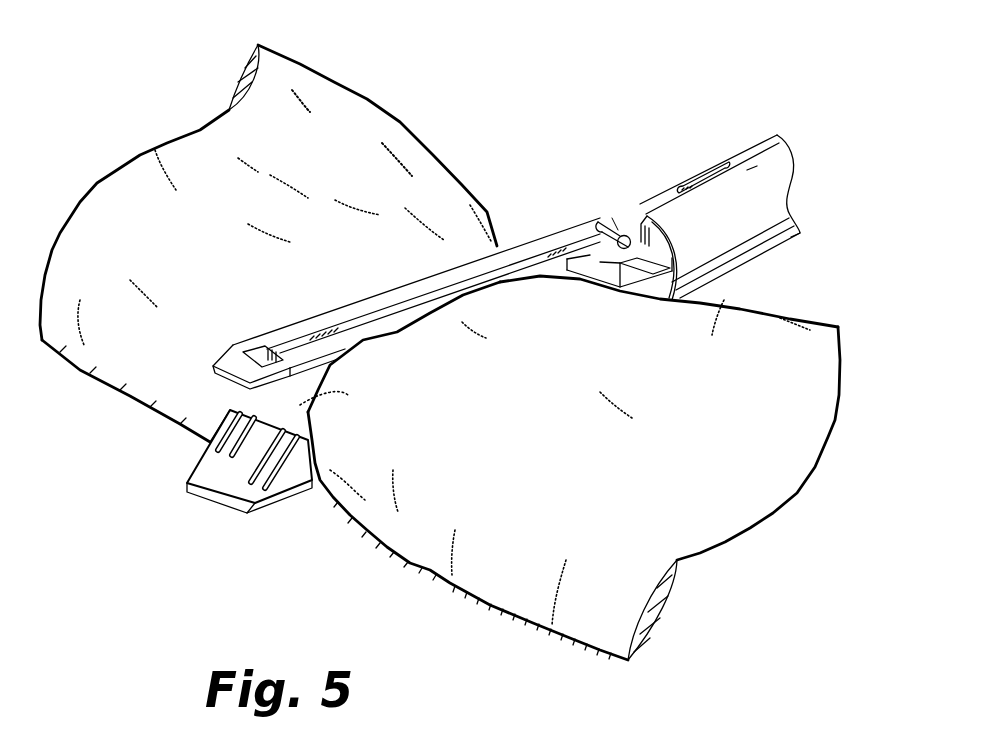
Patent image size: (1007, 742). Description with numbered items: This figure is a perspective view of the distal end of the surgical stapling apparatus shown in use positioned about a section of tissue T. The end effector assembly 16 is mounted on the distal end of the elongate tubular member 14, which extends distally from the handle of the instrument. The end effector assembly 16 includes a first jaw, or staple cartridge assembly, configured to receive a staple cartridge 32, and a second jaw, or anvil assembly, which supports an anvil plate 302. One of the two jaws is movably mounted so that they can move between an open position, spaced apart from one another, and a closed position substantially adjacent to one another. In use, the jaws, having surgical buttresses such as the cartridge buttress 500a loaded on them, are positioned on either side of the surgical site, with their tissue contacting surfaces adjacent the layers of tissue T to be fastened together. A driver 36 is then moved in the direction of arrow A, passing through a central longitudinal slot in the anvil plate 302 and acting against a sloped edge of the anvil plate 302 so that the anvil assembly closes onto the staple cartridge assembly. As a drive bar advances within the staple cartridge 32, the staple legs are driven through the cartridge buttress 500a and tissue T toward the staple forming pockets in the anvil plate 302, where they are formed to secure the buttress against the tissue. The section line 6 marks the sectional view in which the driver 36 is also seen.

The tissue T is at (369, 99).
The anvil plate 302 is at (226, 364).
The staple cartridge 32 is at (215, 503).
The cartridge buttress 500a is at (311, 422).
The end effector assembly 16 is at (152, 513).
The driver 36 is at (610, 226).
The elongate tubular member 14 is at (771, 241).
The arrow A is at (670, 149).
The section line 6 is at (800, 180).